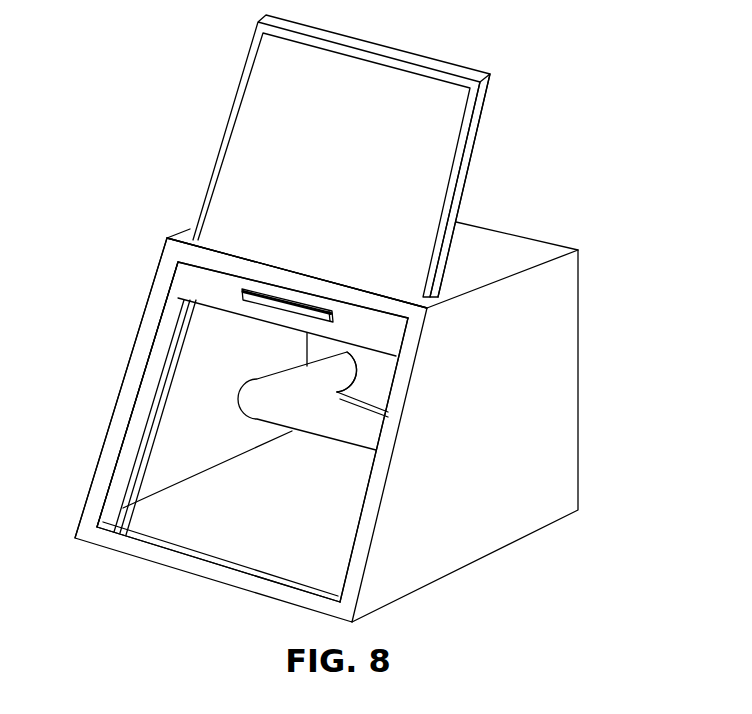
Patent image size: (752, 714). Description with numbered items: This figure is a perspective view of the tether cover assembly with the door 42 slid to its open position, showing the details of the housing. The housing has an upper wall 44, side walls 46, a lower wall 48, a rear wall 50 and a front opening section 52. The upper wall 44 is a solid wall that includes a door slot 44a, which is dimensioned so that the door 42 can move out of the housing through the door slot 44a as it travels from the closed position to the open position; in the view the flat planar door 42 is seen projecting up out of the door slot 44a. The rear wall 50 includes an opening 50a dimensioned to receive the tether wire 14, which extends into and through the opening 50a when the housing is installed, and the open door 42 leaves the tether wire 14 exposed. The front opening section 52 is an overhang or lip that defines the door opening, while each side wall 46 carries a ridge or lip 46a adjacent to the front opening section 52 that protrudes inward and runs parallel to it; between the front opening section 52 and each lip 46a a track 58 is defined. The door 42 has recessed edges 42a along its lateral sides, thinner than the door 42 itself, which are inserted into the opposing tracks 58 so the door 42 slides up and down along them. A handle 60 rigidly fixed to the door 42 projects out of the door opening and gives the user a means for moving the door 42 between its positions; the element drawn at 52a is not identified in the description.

The tether wire 14 is at (325, 422).
The door 42 is at (347, 156).
The recessed edges 42a is at (467, 135).
The upper wall 44 is at (372, 256).
The door slot 44a is at (300, 262).
The side walls 46 is at (198, 345).
The lip 46a is at (157, 402).
The lower wall 48 is at (198, 517).
The rear wall 50 is at (360, 375).
The opening 50a is at (380, 363).
The front opening section 52 is at (251, 430).
The frame inner edge 52a is at (360, 507).
The track 58 is at (132, 455).
The handle 60 is at (255, 300).